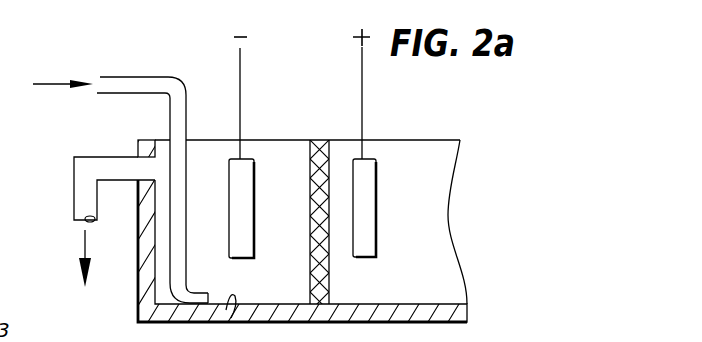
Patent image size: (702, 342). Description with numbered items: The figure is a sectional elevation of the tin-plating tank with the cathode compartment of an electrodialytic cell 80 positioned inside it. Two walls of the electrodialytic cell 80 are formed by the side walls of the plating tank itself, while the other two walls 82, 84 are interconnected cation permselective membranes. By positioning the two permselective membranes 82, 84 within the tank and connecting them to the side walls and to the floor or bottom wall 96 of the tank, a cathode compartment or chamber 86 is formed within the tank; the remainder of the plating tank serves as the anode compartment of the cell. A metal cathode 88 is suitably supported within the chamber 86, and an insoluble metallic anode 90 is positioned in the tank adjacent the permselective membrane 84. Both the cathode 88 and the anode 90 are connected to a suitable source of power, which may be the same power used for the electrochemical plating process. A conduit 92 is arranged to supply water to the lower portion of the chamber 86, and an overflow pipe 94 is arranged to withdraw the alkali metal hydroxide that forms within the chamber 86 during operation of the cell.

The electrodialytic cell 80 is at (289, 241).
The cation permselective membrane 82 is at (295, 337).
The cation permselective membrane 84 is at (331, 293).
The cathode compartment 86 is at (291, 158).
The cathode 88 is at (250, 159).
The anode 90 is at (380, 172).
The conduit 92 is at (168, 77).
The overflow pipe 94 is at (73, 212).
The bottom wall 96 is at (226, 310).